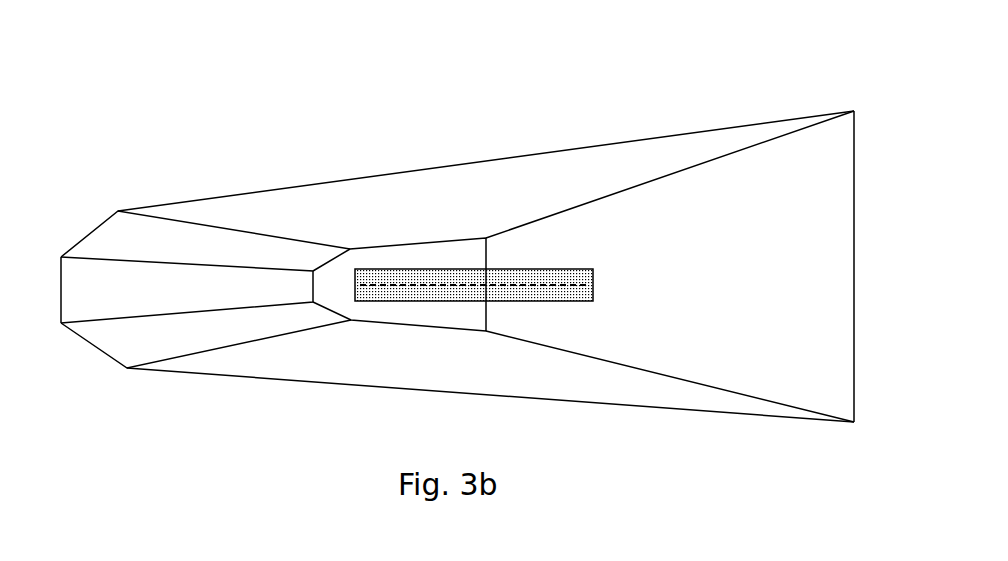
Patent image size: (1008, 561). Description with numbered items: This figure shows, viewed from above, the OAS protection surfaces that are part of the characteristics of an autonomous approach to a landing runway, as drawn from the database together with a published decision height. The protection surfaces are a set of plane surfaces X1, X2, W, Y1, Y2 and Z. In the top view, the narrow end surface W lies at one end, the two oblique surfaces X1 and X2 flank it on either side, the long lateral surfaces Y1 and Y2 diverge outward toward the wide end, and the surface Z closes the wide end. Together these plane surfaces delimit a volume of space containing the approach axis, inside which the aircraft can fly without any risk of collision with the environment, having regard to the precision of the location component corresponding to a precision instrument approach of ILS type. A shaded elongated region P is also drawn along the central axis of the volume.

The plane surface W is at (82, 275).
The plane surface X1 is at (110, 230).
The plane surface X2 is at (103, 340).
The plane surface Y1 is at (358, 193).
The plane surface Y2 is at (293, 365).
The plane surface Z is at (836, 140).
The probe / pin element P is at (583, 273).